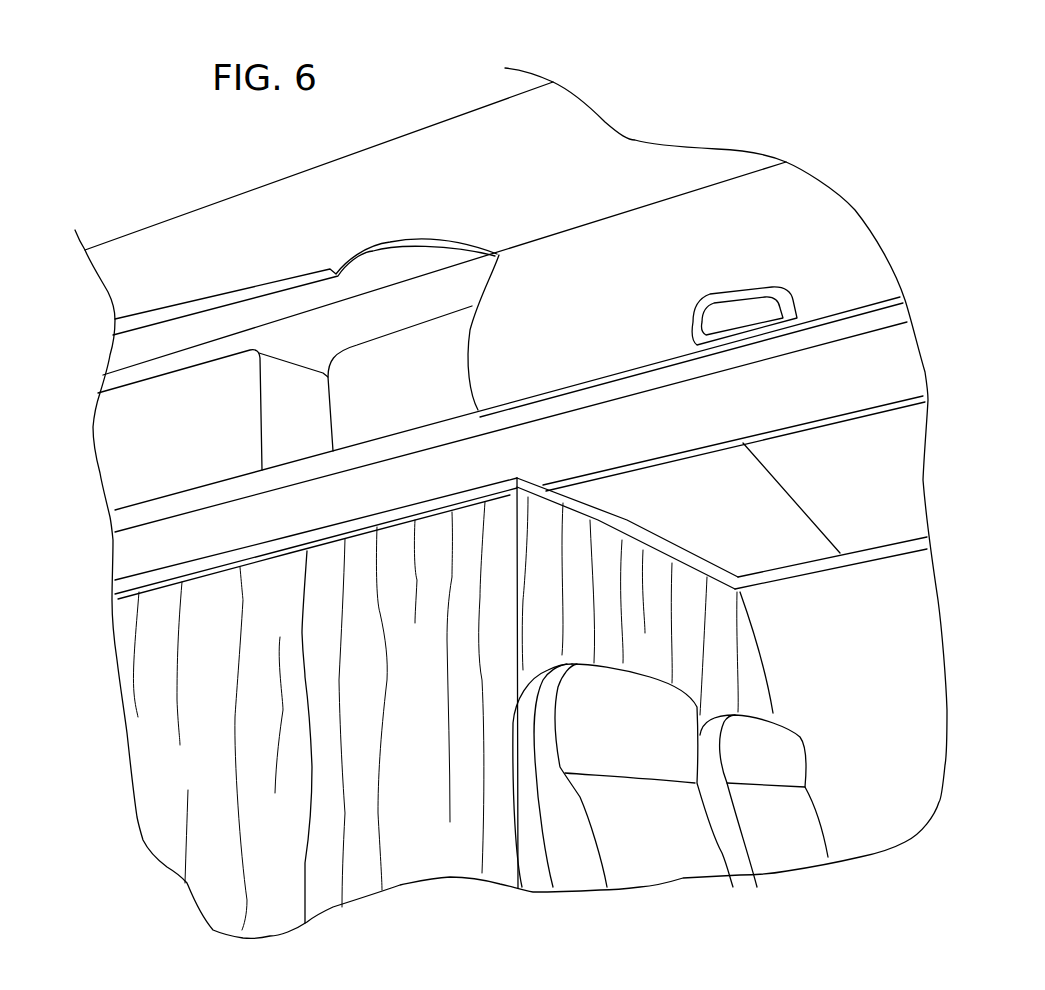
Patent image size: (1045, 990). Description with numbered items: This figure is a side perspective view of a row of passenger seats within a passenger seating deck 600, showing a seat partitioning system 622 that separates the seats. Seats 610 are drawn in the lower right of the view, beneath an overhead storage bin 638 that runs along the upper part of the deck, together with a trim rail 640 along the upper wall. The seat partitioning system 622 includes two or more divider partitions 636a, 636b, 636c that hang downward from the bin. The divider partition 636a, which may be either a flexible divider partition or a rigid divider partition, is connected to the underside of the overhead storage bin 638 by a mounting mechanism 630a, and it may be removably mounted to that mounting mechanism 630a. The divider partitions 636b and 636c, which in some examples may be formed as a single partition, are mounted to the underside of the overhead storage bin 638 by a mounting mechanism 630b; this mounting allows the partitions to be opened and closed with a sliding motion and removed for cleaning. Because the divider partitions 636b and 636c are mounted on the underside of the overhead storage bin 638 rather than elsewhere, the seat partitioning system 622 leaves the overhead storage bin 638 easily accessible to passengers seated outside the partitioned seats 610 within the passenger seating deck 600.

The passenger seating deck 600 is at (687, 102).
The seat partitioning system 622 is at (140, 211).
The trim rail 640 is at (262, 284).
The overhead storage bin 638 is at (707, 477).
The mounting mechanism 630a is at (688, 549).
The mounting mechanism 630b is at (138, 583).
The divider partition 636a is at (697, 636).
The divider partition 636b is at (433, 786).
The divider partition 636c is at (207, 782).
The seats 610 is at (683, 872).